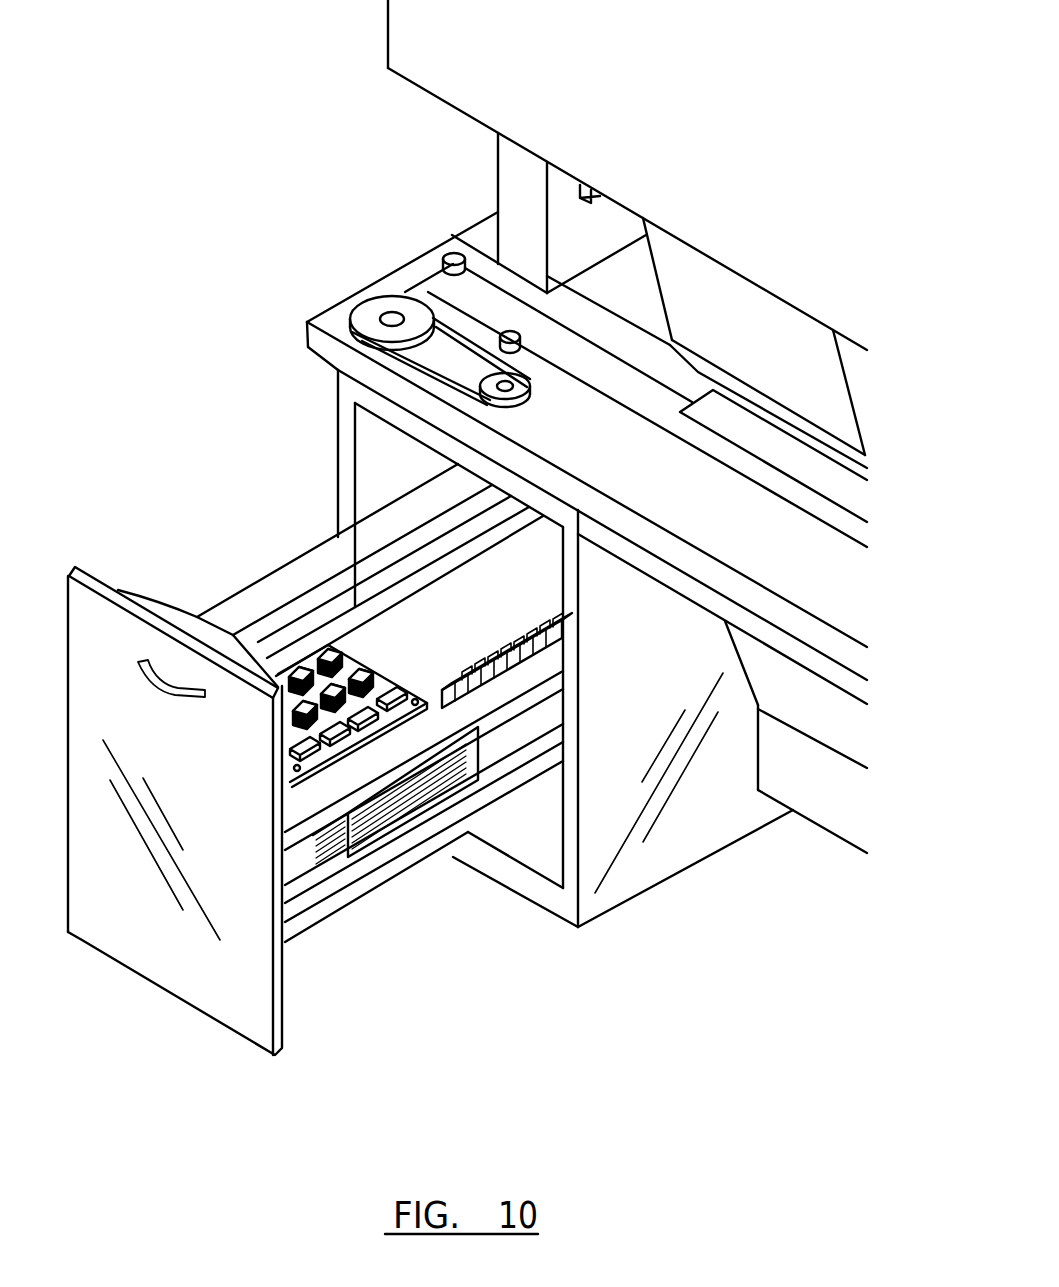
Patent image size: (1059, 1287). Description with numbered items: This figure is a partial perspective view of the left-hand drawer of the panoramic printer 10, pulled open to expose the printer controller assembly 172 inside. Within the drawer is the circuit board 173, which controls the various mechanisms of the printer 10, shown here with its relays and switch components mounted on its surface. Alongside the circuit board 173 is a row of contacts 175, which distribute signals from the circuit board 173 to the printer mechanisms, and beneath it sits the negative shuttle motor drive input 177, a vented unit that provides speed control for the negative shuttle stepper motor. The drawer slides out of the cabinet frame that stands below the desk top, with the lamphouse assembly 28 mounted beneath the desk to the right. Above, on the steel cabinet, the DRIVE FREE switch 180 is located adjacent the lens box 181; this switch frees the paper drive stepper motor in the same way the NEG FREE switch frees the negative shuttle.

The panoramic printer 10 is at (392, 131).
The lamphouse assembly 28 is at (829, 800).
The printer controller assembly 172 is at (311, 720).
The circuit board 173 is at (342, 742).
The contacts 175 is at (517, 673).
The negative shuttle motor drive input 177 is at (427, 797).
The DRIVE FREE switch 180 is at (588, 186).
The lens box 181 is at (755, 326).